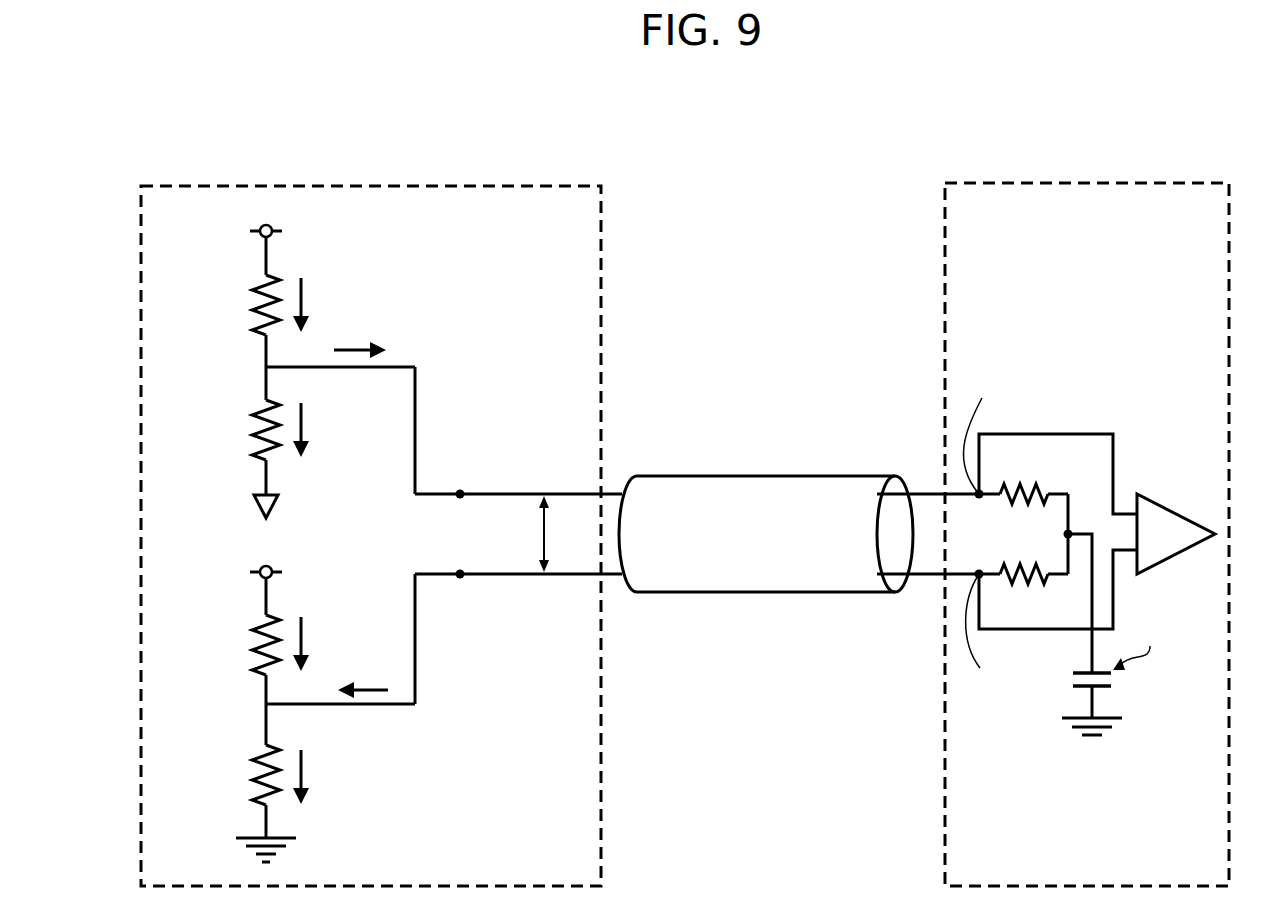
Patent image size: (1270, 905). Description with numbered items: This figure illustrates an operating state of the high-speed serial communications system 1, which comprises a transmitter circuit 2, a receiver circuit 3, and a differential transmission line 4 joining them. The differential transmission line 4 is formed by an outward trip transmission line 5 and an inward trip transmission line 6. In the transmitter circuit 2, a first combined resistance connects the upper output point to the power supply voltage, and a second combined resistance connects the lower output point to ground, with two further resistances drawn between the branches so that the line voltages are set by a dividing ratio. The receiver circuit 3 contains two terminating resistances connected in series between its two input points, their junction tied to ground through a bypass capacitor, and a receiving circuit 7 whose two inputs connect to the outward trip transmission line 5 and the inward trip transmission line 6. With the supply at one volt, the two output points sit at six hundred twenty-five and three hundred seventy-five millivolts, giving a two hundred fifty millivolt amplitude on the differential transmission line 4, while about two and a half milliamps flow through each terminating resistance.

The high-speed serial communications system 1 is at (1234, 122).
The transmitter circuit 2 is at (502, 186).
The receiver circuit 3 is at (1156, 183).
The differential transmission line 4 is at (748, 476).
The outward trip transmission line 5 is at (924, 490).
The inward trip transmission line 6 is at (925, 588).
The receiving circuit 7 is at (1172, 506).